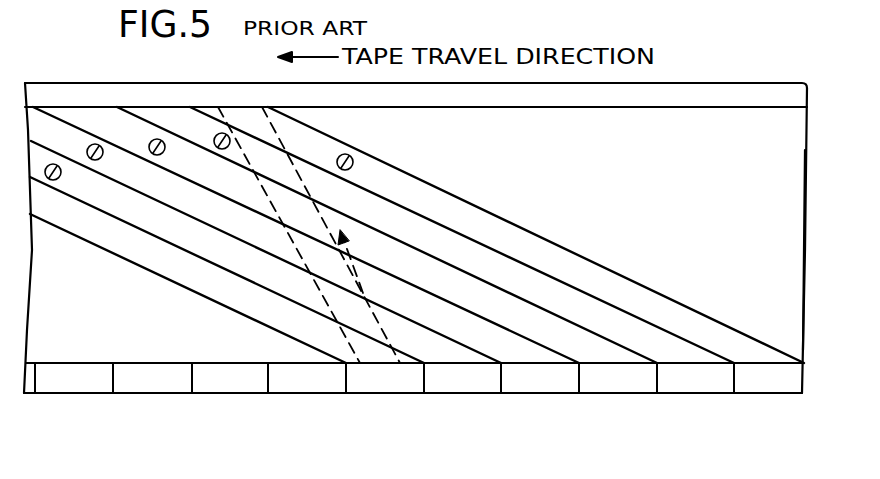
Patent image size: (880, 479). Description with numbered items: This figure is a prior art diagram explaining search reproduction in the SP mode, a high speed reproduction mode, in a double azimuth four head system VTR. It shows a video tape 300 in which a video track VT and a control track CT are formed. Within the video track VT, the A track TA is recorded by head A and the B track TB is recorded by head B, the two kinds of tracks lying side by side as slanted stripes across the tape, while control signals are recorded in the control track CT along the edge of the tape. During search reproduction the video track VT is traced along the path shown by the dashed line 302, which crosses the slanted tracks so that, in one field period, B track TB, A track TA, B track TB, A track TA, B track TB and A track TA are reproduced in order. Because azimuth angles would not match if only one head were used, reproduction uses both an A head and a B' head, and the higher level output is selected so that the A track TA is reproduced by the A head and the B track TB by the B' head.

The video tape 300 is at (803, 71).
The dashed line 302 is at (280, 142).
The A track TA is at (310, 303).
The B track TB is at (222, 300).
The video track VT is at (795, 252).
The control track CT is at (797, 383).